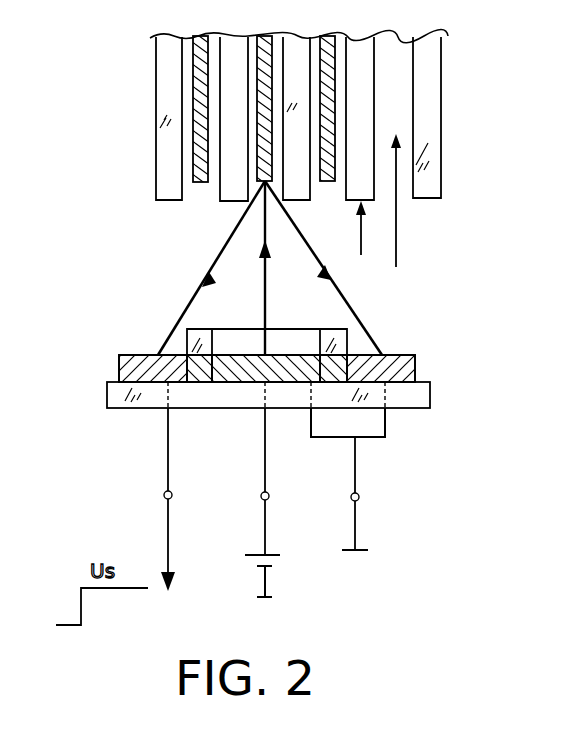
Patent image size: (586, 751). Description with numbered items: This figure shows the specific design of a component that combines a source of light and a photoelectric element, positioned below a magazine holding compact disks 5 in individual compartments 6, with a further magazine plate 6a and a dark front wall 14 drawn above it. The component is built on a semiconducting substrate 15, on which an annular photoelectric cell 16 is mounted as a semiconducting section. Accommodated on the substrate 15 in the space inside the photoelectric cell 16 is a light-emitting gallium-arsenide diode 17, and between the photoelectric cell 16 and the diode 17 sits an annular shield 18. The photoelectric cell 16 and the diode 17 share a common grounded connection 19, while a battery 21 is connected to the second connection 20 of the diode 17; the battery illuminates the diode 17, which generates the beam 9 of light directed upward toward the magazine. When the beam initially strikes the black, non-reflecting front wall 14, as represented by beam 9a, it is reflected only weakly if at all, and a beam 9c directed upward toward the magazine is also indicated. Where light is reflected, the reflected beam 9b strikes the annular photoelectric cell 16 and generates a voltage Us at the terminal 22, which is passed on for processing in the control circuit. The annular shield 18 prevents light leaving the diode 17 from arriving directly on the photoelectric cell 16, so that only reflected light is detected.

The compact disk 5 is at (202, 57).
The compartment 6 is at (200, 172).
The transparent plate 6a is at (423, 100).
The front wall 14 is at (423, 199).
The beam of light 9 is at (265, 312).
The beam 9a is at (360, 232).
The reflected beam 9b is at (225, 242).
The light beam 9c is at (397, 253).
The semiconducting substrate 15 is at (123, 402).
The annular photoelectric cell 16 is at (120, 362).
The light-emitting gallium-arsenide diode 17 is at (242, 375).
The annular shield 18 is at (198, 343).
The common grounded connection 19 is at (352, 466).
The second connection 20 is at (282, 468).
The battery 21 is at (272, 553).
The terminal 22 is at (184, 486).